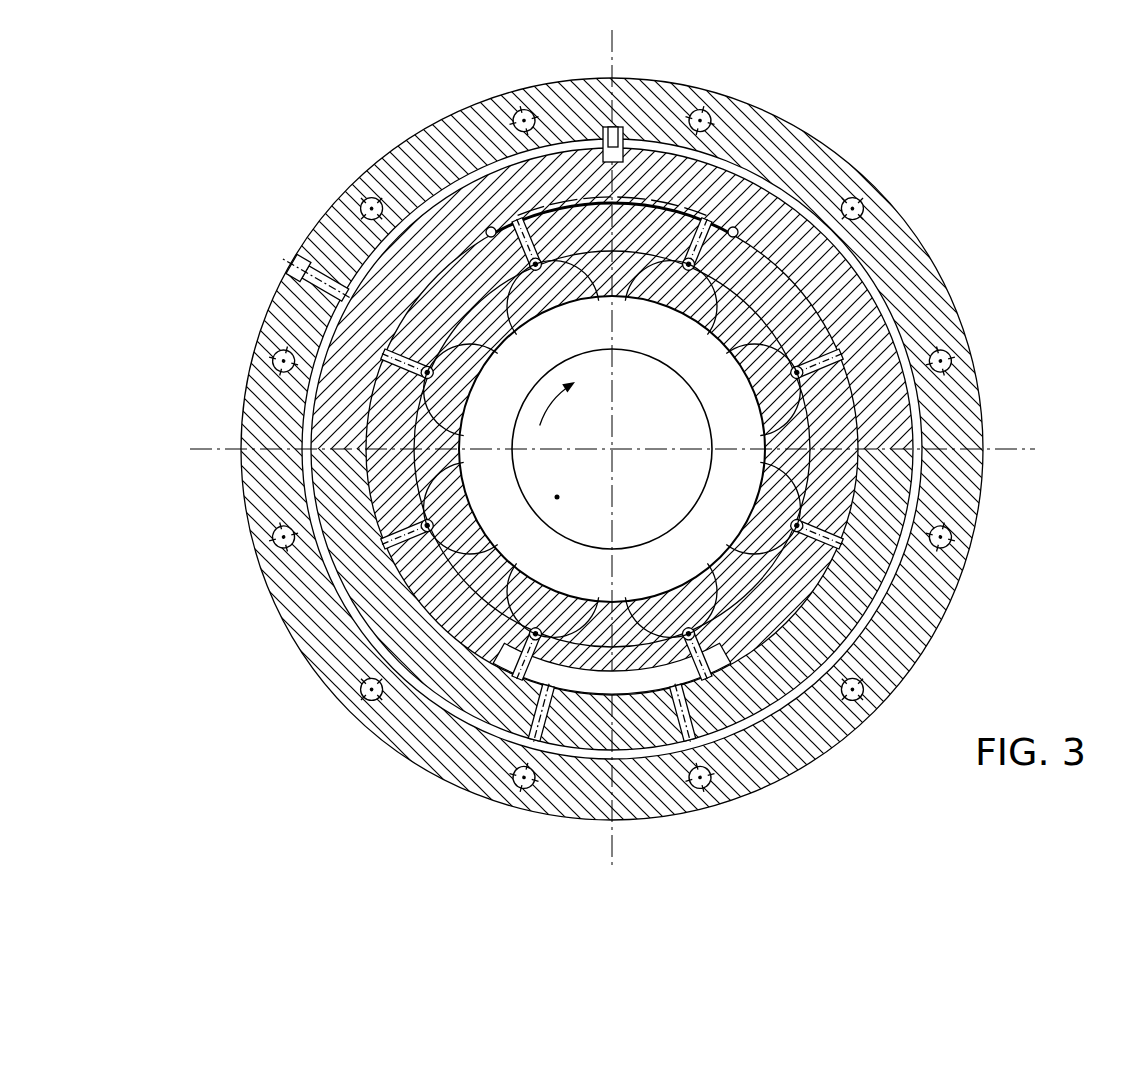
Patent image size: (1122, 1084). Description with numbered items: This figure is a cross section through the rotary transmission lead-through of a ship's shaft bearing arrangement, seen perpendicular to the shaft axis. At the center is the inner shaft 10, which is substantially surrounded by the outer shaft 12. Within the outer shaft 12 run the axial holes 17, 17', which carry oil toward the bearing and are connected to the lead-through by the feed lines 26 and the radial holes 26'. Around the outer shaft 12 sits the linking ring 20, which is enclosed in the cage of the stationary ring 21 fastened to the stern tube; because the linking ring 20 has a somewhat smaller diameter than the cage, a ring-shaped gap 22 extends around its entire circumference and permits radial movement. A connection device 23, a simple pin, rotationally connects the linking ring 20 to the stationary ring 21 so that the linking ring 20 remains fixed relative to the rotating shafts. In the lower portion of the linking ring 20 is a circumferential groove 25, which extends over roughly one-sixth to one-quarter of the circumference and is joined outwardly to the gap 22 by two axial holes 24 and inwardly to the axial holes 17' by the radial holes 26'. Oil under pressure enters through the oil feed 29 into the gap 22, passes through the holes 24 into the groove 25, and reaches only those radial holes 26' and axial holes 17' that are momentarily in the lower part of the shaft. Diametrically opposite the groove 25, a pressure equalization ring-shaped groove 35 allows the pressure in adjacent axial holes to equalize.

The inner shaft 10 is at (430, 557).
The outer shaft 12 is at (400, 545).
The axial holes 17 is at (612, 383).
The axial holes 17' is at (612, 616).
The linking ring 20 is at (348, 532).
The stationary ring 21 is at (265, 512).
The ring-shaped gap 22 is at (307, 476).
The connection device 23 is at (600, 128).
The axial holes 24 is at (508, 723).
The circumferential groove 25 is at (643, 700).
The feed lines 26 is at (612, 408).
The radial holes 26' is at (612, 591).
The oil feed 29 is at (270, 249).
The pressure equalization ring-shaped groove 35 is at (675, 205).